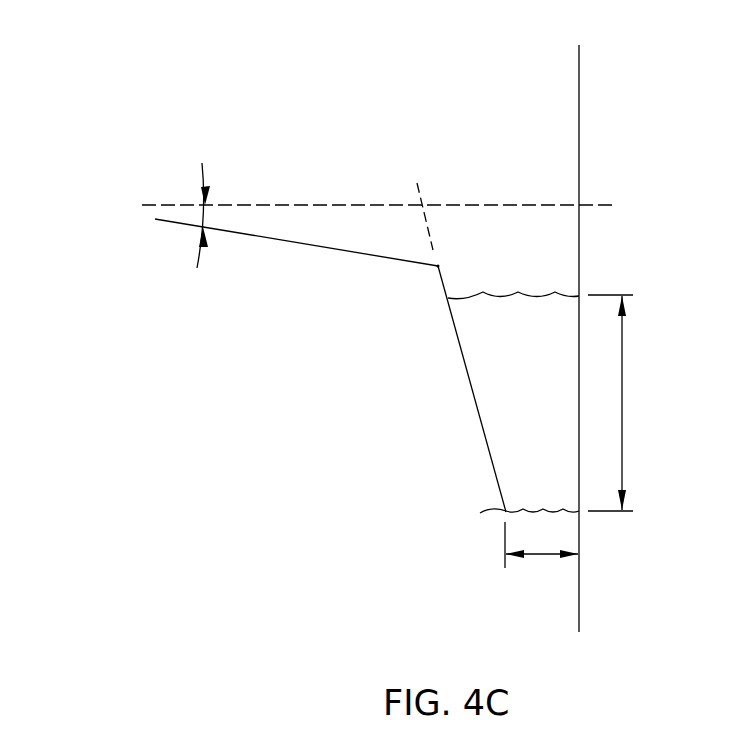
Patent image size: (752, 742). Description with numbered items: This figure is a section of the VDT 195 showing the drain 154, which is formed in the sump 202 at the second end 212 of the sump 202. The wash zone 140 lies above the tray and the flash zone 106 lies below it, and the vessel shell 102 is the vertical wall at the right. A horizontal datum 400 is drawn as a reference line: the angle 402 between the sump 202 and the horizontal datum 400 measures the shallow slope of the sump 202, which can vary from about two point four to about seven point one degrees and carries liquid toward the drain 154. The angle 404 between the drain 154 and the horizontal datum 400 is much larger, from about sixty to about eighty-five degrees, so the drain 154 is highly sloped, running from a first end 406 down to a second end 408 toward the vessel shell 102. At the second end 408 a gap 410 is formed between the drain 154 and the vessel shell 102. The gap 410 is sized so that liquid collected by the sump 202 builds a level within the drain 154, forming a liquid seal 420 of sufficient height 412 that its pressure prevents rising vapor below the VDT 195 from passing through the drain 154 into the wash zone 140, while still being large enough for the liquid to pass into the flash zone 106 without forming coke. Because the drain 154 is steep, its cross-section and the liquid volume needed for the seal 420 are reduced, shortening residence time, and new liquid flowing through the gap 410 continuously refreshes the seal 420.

The VDT 195 is at (163, 66).
The wash zone 140 is at (358, 104).
The flash zone 106 is at (347, 564).
The vessel shell 102 is at (580, 115).
The horizontal datum 400 is at (366, 204).
The sump 202 is at (303, 244).
The angle 402 is at (207, 214).
The angle 404 is at (458, 214).
The first end 406 is at (437, 267).
The drain 154 is at (481, 424).
The liquid seal 420 is at (490, 366).
The second end 212 is at (397, 334).
The second end 408 is at (480, 513).
The height 412 is at (622, 395).
The gap 410 is at (540, 556).